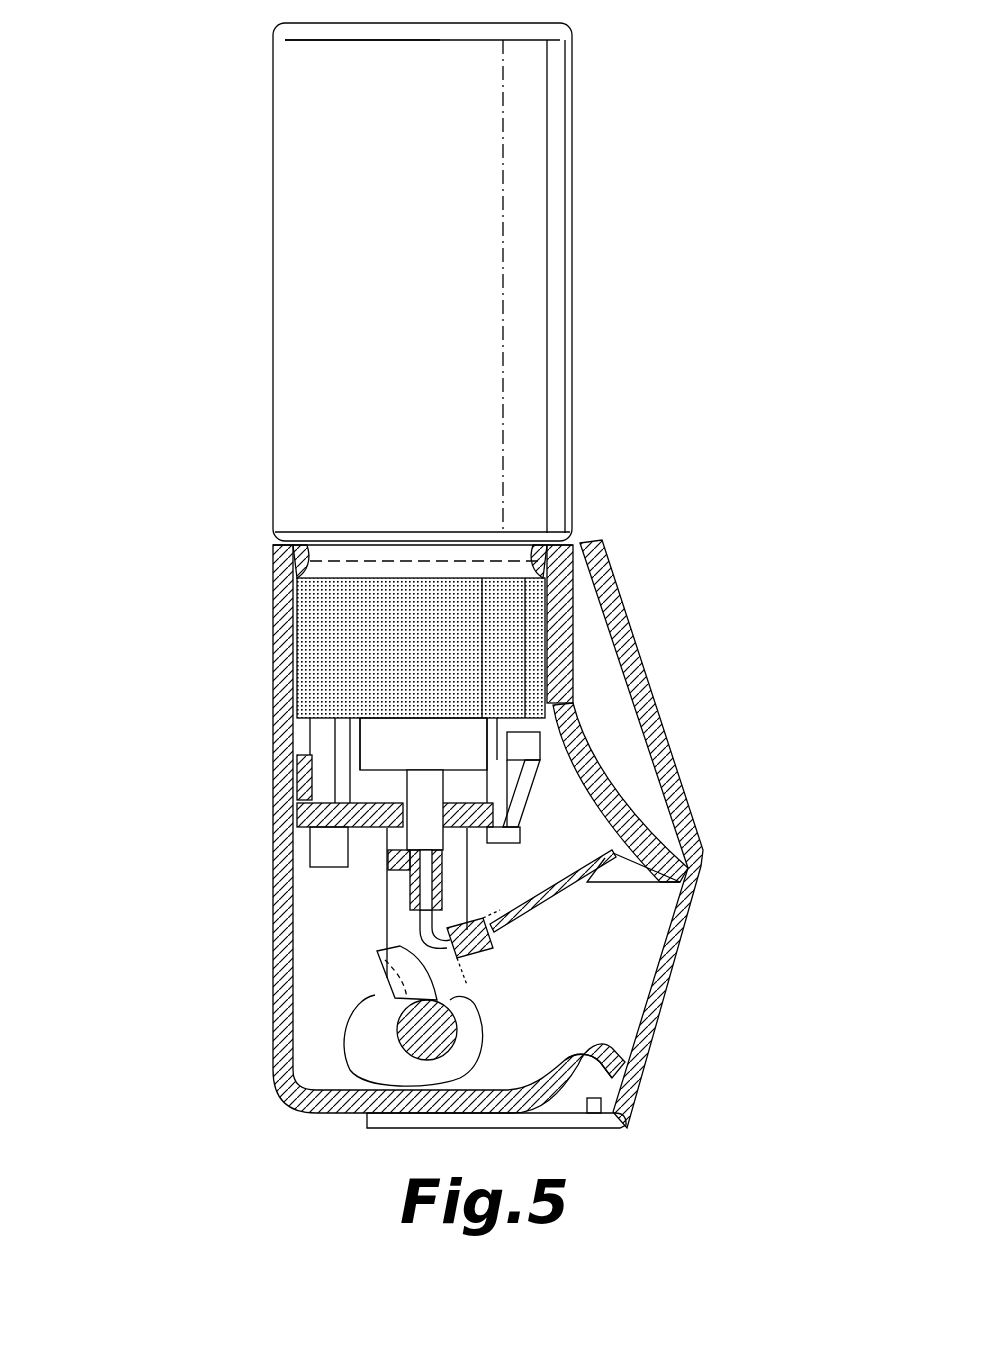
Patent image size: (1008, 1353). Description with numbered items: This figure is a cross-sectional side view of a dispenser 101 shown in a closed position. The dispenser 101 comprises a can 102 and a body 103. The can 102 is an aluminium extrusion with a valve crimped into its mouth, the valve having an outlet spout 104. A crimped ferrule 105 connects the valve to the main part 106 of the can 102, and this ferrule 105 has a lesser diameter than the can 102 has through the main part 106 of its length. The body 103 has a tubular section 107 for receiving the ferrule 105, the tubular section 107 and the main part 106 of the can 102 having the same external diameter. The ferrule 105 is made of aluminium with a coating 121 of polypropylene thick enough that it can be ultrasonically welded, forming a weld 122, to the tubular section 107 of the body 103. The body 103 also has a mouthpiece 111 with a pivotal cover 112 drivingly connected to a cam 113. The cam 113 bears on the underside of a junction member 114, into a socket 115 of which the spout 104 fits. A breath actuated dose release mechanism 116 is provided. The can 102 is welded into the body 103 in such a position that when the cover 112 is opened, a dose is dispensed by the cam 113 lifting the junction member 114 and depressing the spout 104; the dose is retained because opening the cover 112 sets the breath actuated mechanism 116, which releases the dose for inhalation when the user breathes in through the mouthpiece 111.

The dispenser 101 is at (660, 426).
The can 102 is at (525, 195).
The body 103 is at (282, 942).
The outlet spout 104 is at (427, 795).
The crimped ferrule 105 is at (345, 636).
The main part of the can 106 is at (400, 372).
The tubular section 107 is at (283, 580).
The mouthpiece 111 is at (607, 1043).
The pivotal cover 112 is at (672, 942).
The cam 113 is at (370, 1032).
The junction member 114 is at (327, 807).
The socket 115 is at (393, 857).
The breath actuated dose release mechanism 116 is at (524, 933).
The coating 121 is at (435, 652).
The ultrasonic weld 122 is at (547, 681).